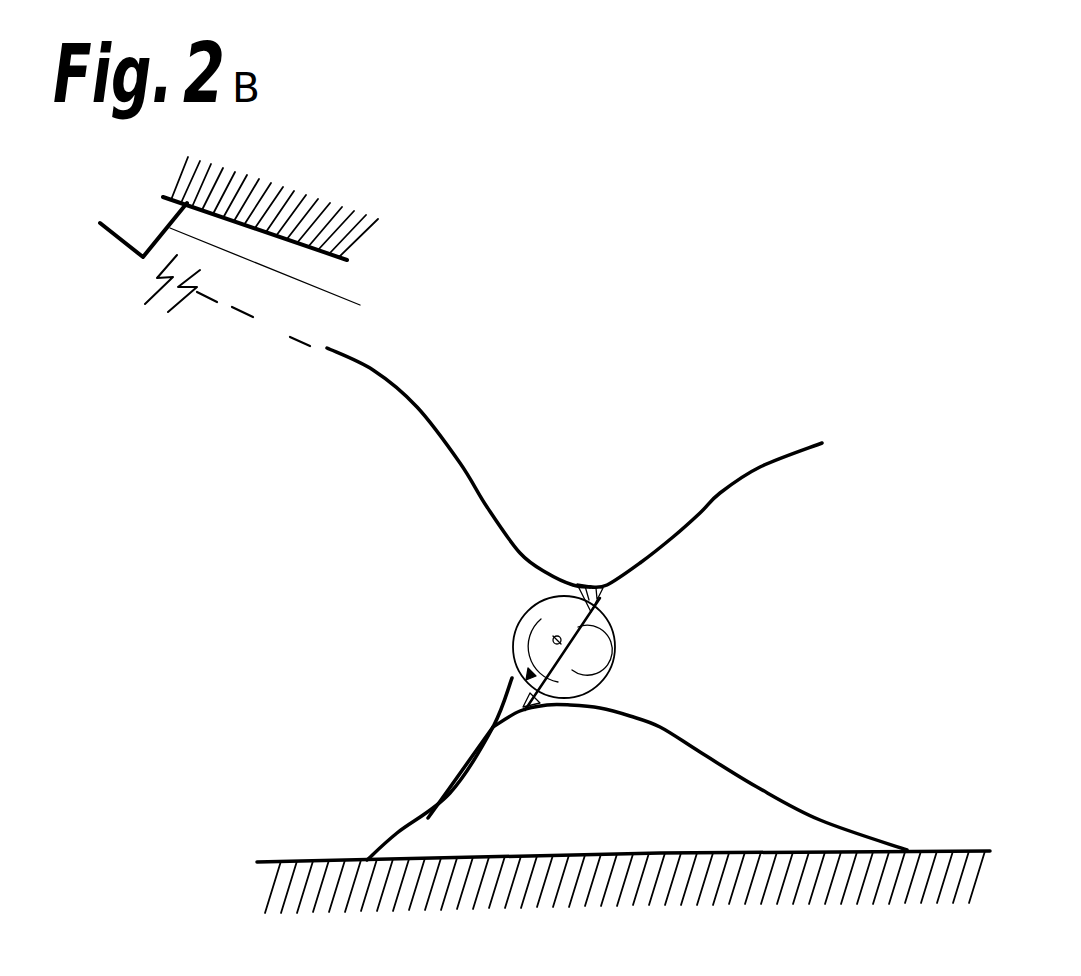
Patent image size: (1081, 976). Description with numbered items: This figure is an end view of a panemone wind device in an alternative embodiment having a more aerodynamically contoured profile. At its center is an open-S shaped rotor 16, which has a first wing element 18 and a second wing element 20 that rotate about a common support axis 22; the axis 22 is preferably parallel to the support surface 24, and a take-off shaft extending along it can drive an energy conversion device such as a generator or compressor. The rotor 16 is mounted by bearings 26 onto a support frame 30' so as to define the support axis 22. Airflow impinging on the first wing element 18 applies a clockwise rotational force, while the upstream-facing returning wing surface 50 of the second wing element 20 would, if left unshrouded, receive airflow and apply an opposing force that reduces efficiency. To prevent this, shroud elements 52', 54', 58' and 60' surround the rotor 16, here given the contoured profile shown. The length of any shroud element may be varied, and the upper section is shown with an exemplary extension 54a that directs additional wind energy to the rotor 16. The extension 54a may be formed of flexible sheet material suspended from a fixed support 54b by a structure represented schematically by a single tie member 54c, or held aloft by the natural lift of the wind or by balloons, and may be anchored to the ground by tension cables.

The rotor 16 is at (534, 602).
The first wing element 18 is at (576, 600).
The second wing element 20 is at (553, 641).
The support axis 22 is at (555, 645).
The support surface 24 is at (940, 850).
The bearings 26 is at (598, 613).
The support frame 30' is at (509, 786).
The returning wing surface 50 is at (530, 708).
The shroud element 52' is at (378, 769).
The shroud element 54' is at (393, 452).
The extension 54a is at (120, 245).
The fixed support 54b is at (267, 183).
The tie member 54c is at (360, 305).
The shroud element 58' is at (710, 461).
The shroud element 60' is at (700, 754).